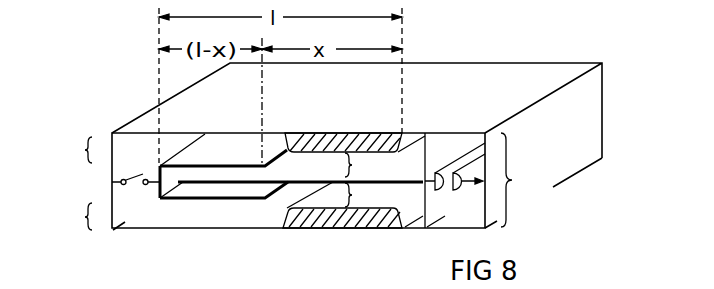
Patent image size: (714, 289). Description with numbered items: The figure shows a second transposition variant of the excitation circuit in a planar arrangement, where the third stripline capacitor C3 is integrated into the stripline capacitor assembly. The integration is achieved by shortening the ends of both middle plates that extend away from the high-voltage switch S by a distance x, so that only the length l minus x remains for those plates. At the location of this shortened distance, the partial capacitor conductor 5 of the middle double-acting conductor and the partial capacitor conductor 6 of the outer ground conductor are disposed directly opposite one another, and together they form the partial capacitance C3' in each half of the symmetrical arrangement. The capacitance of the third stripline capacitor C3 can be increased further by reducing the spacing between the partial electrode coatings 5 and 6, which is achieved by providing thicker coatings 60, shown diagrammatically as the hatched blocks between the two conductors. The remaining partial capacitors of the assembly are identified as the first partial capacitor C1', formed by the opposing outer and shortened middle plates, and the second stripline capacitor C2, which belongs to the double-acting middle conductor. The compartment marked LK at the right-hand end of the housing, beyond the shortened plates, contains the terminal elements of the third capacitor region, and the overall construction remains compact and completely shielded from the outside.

The thicker coatings 60 is at (344, 135).
The partial conductor 5 is at (404, 192).
The partial conductor 6 is at (364, 229).
The short-circuit / termination compartment LK is at (455, 180).
The high-voltage switch S is at (129, 188).
The second stripline capacitor C2 is at (157, 170).
The first partial capacitor C1' is at (77, 185).
The partial capacitance C3' is at (362, 183).
The third stripline capacitor C3 is at (524, 180).